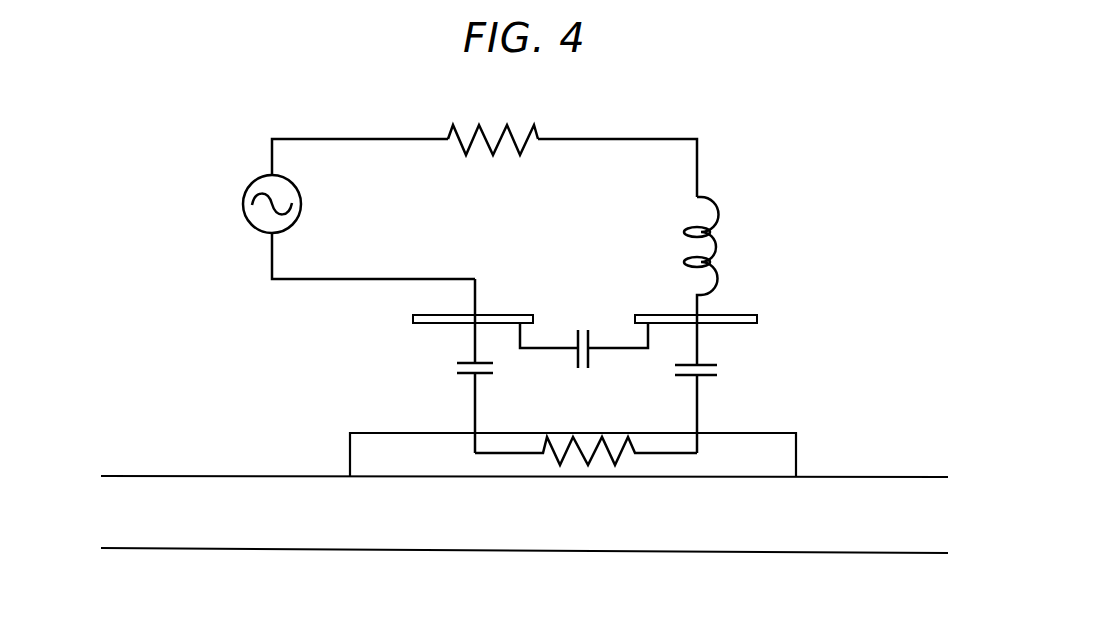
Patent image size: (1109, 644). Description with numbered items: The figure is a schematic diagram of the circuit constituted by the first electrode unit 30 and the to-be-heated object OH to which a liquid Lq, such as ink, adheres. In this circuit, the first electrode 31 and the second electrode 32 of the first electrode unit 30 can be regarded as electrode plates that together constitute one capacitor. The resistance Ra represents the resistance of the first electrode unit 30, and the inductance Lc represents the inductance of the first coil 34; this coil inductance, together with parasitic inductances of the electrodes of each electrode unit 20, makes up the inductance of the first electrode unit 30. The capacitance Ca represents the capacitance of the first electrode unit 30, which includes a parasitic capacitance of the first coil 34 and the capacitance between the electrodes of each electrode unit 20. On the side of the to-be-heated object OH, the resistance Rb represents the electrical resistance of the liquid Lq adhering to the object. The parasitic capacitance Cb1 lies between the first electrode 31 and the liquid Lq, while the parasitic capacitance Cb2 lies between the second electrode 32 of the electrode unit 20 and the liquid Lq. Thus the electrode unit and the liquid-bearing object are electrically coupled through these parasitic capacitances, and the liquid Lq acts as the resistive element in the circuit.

The first electrode unit 30 is at (729, 136).
The electrode unit 20 is at (535, 337).
The resistance of the first electrode unit Ra is at (512, 134).
The inductance of the first coil Lc is at (716, 222).
The first coil 34 is at (717, 247).
The first electrode 31 is at (748, 315).
The second electrode 32 is at (441, 313).
The capacitance of the first electrode unit Ca is at (594, 332).
The parasitic capacitance between the first electrode and the liquid Cb1 is at (705, 377).
The parasitic capacitance between the second electrode and the liquid Cb2 is at (467, 374).
The liquid Lq is at (797, 455).
The electrical resistance of the liquid Rb is at (595, 455).
The to-be-heated object OH is at (765, 553).